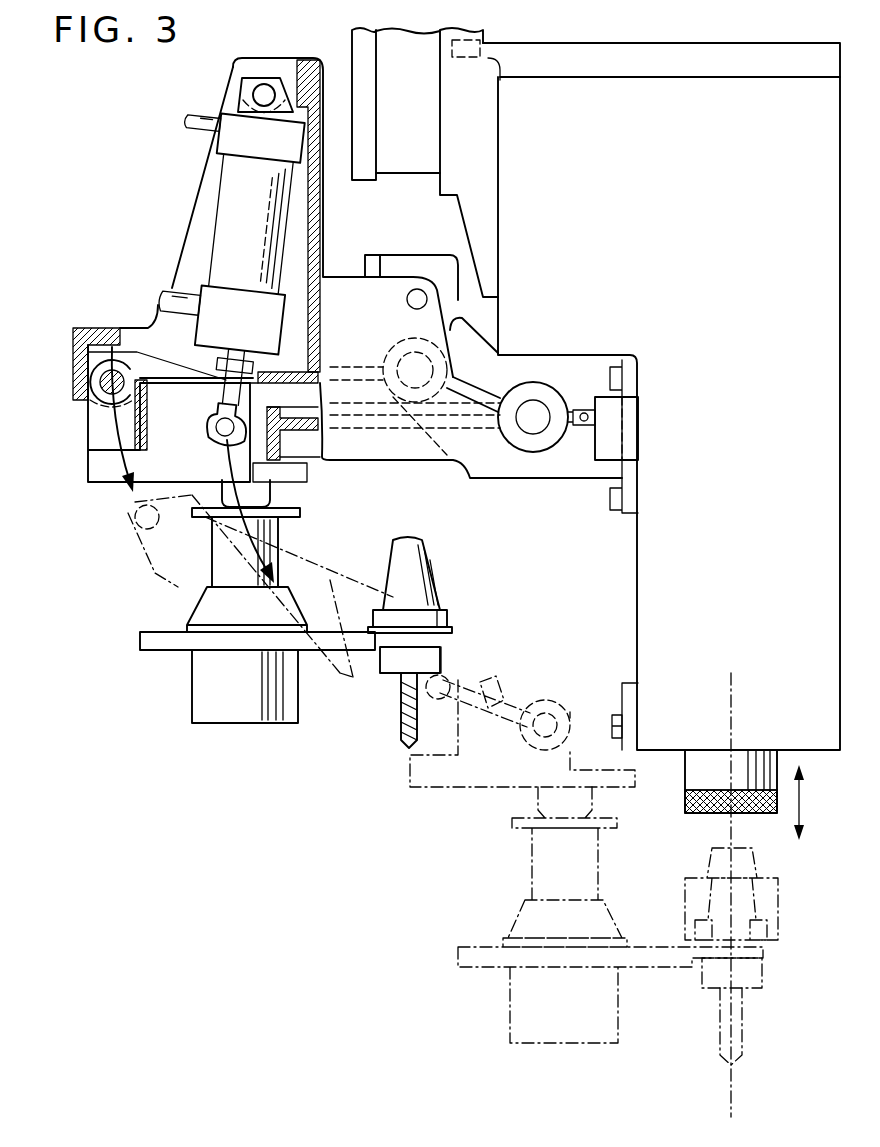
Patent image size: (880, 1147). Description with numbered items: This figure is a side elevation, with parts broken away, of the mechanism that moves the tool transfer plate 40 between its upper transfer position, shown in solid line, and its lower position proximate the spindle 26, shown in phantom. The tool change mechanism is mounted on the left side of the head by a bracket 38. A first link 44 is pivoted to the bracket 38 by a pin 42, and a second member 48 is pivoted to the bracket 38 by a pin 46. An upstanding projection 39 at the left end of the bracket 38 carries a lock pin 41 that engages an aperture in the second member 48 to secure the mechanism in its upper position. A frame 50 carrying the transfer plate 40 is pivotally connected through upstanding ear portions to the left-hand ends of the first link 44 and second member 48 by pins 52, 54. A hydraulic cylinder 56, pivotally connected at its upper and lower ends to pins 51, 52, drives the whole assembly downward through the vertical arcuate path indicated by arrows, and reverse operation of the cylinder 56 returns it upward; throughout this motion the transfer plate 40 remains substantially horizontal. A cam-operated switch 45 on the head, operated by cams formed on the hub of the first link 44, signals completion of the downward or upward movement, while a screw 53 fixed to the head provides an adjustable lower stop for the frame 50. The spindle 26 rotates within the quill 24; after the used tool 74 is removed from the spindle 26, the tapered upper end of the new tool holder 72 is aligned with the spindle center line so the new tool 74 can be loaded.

The quill 24 is at (750, 542).
The spindle 26 is at (713, 775).
The bracket 38 is at (563, 470).
The upstanding projection 39 is at (400, 262).
The transfer plate 40 is at (148, 640).
The lock pin 41 is at (420, 290).
The pin 42 is at (535, 410).
The first link 44 is at (430, 448).
The cam-operated switch 45 is at (615, 420).
The pin 46 is at (412, 360).
The second member 48 is at (347, 283).
The frame 50 is at (90, 465).
The pin 51 is at (266, 92).
The pin 52 is at (213, 425).
The screw 53 is at (615, 715).
The pin 54 is at (100, 387).
The hydraulic cylinder 56 is at (230, 183).
The tool holder 72 is at (424, 572).
The tool 74 is at (400, 722).